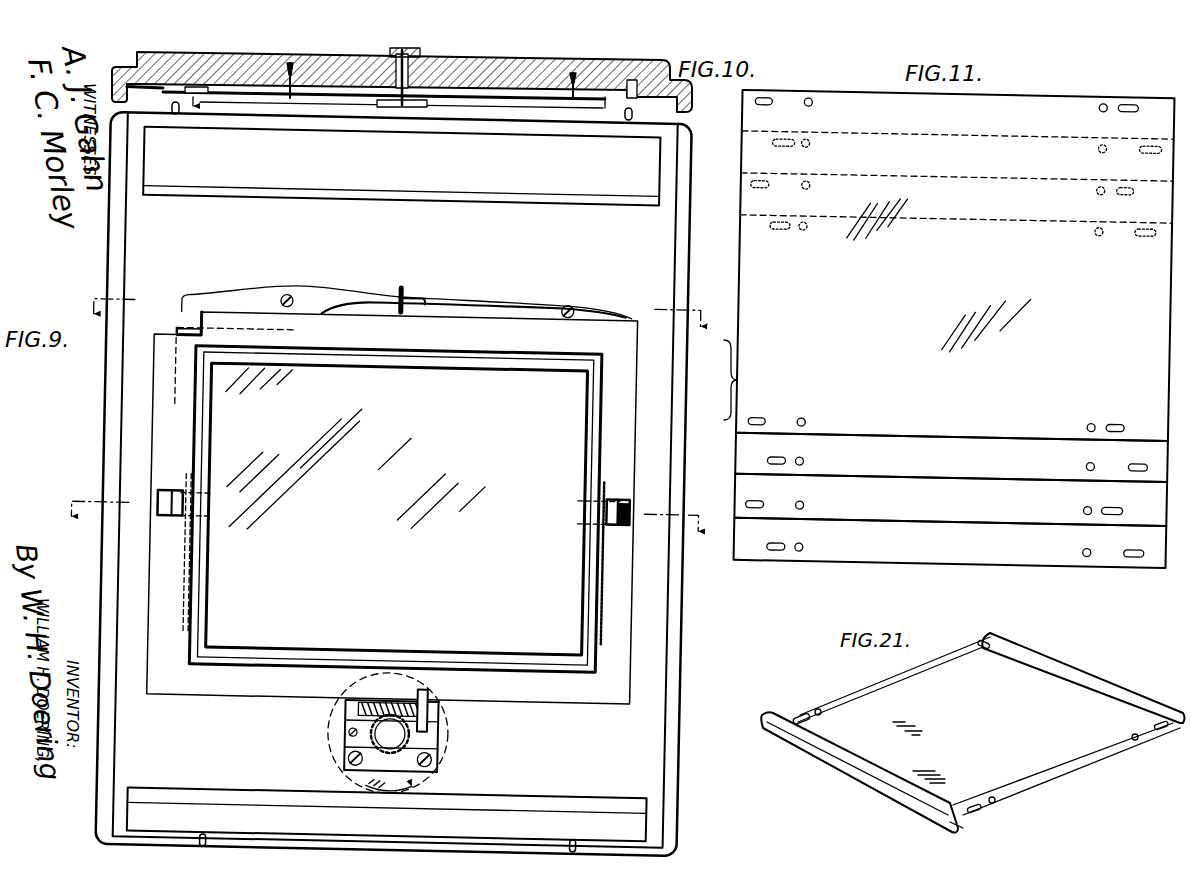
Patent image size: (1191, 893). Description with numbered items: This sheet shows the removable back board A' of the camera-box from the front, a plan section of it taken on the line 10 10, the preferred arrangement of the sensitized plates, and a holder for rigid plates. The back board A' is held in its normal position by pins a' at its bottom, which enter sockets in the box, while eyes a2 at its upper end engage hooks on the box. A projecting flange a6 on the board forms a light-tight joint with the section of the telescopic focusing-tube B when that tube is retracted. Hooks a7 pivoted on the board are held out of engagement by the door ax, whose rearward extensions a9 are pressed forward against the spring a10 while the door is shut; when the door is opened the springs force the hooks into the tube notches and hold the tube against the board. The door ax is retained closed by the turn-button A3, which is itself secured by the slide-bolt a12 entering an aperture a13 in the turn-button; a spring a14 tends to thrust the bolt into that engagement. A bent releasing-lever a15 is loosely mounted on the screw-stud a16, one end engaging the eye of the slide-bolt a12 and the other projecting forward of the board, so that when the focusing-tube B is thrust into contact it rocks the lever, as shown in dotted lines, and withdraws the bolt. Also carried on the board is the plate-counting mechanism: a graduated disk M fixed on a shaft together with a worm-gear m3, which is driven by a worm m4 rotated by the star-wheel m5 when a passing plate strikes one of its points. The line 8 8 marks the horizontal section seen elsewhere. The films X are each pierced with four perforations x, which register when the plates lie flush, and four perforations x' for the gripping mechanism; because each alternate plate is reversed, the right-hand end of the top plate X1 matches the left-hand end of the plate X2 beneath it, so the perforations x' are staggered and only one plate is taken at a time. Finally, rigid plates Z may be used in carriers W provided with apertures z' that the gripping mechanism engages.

In FIG. 9, the back board A' is at (414, 484).
In FIG. 10, the back board A' is at (366, 99).
In FIG. 9, the pins a' is at (388, 831).
In FIG. 10, the eyes a2 is at (178, 114).
In FIG. 9, the projecting flange a6 is at (346, 351).
In FIG. 9, the hooks a7 is at (172, 490).
In FIG. 9, the rearward extensions a9 is at (212, 506).
In FIG. 9, the spring a10 is at (186, 548).
In FIG. 9, the slide-bolt a12 is at (399, 288).
In FIG. 10, the slide-bolt a12 is at (402, 110).
In FIG. 10, the aperture a13 is at (387, 71).
In FIG. 9, the spring a14 is at (499, 314).
In FIG. 10, the spring a14 is at (517, 97).
In FIG. 9, the bent releasing-lever a15 is at (236, 308).
In FIG. 10, the bent releasing-lever a15 is at (353, 102).
In FIG. 9, the screw-stud a16 is at (290, 300).
In FIG. 10, the screw-stud a16 is at (290, 100).
In FIG. 9, the door ax is at (355, 450).
In FIG. 10, the turn-button A3 is at (422, 52).
In FIG. 9, the telescopic focusing-tube B is at (172, 334).
In FIG. 9, the graduated disk M is at (336, 742).
In FIG. 9, the worm-gear m3 is at (447, 745).
In FIG. 9, the worm m4 is at (397, 703).
In FIG. 9, the star-wheel m5 is at (436, 690).
In FIG. 9, the section line 8 is at (388, 506).
In FIG. 9, the section line 10 is at (397, 301).
In FIG. 11, the films X is at (718, 380).
In FIG. 11, the top plate X1 is at (955, 265).
In FIG. 11, the plate X2 is at (951, 500).
In FIG. 11, the perforations x is at (950, 327).
In FIG. 11, the perforations x' is at (953, 328).
In FIG. 21, the carriers W is at (845, 697).
In FIG. 21, the rigid plates Z is at (989, 726).
In FIG. 21, the apertures z' is at (982, 733).